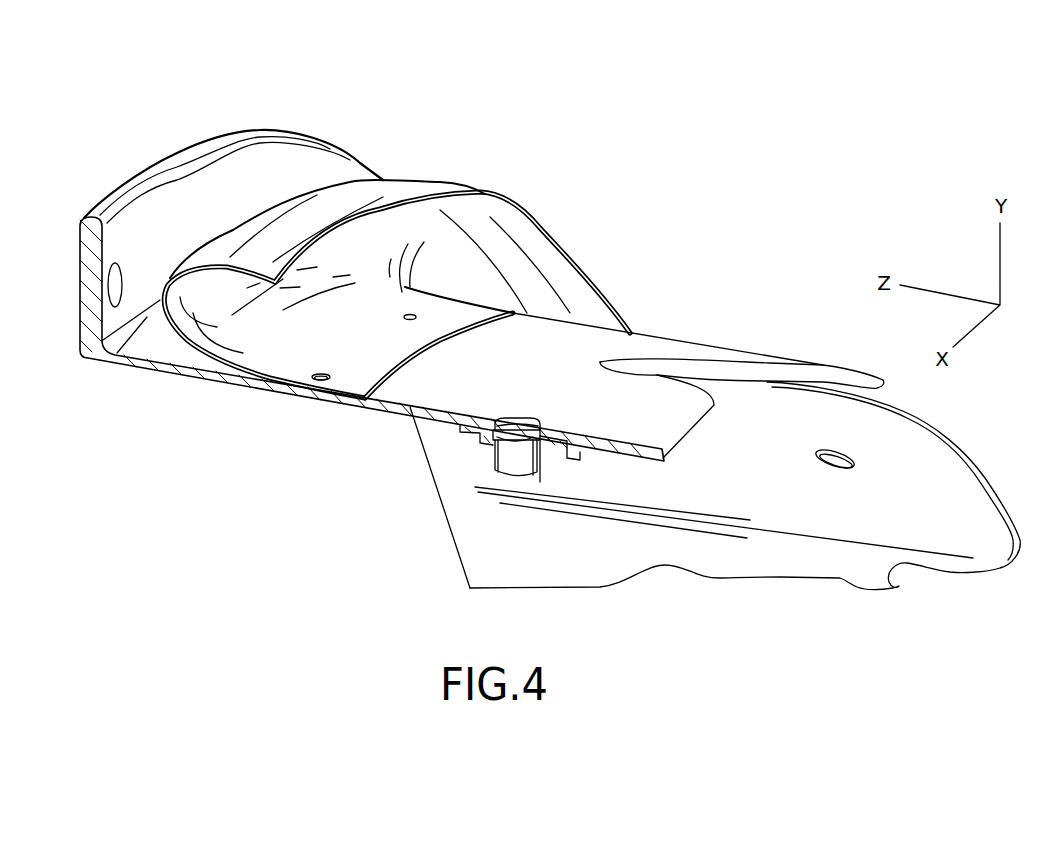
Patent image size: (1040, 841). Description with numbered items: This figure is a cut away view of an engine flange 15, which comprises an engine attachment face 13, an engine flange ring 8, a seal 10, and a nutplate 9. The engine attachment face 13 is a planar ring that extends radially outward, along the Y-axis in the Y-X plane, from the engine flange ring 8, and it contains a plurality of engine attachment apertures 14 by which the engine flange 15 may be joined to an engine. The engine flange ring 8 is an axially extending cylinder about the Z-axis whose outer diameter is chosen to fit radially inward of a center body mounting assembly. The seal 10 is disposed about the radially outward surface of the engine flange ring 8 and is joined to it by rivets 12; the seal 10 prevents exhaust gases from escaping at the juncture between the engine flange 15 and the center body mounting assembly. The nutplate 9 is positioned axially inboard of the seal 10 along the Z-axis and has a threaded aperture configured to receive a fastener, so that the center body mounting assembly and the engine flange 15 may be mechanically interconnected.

The engine flange ring 8 is at (168, 372).
The nutplate 9 is at (533, 478).
The seal 10 is at (548, 233).
The rivets 12 is at (323, 381).
The engine attachment face 13 is at (212, 183).
The engine attachment apertures 14 is at (119, 264).
The engine flange 15 is at (772, 127).